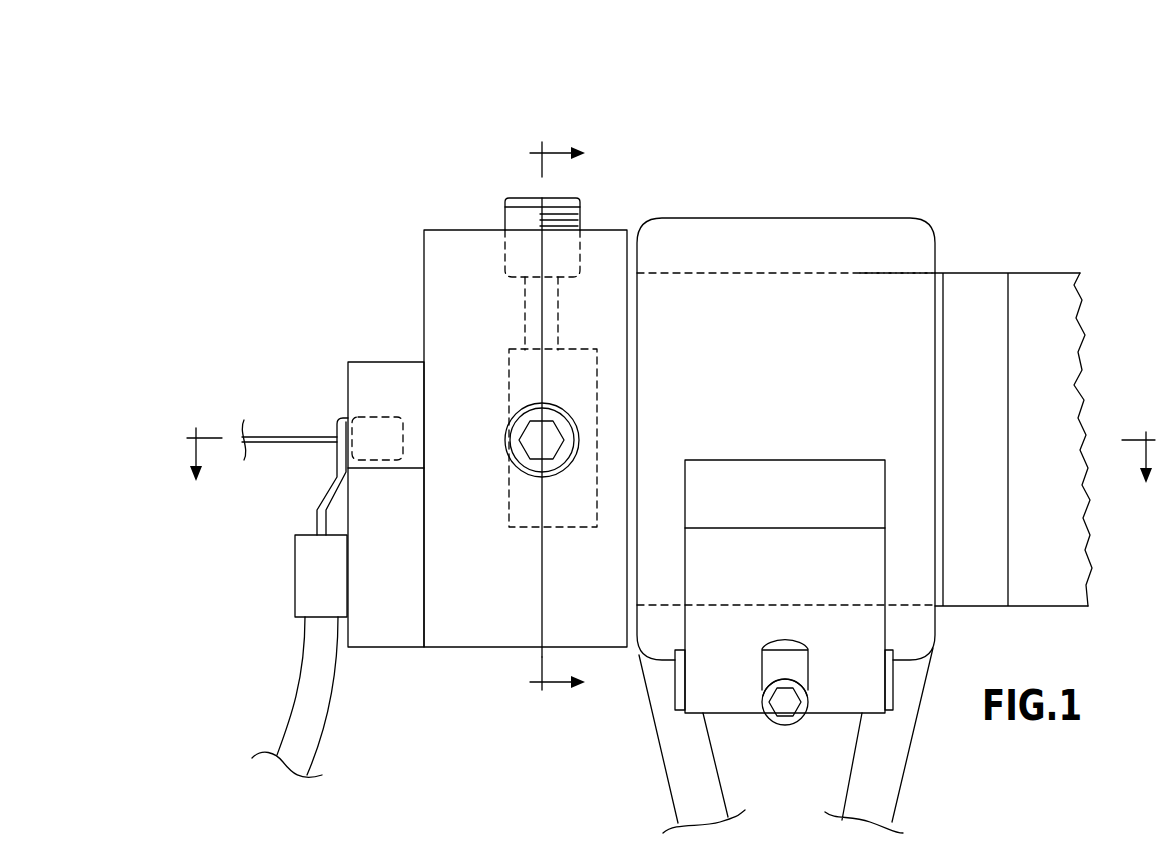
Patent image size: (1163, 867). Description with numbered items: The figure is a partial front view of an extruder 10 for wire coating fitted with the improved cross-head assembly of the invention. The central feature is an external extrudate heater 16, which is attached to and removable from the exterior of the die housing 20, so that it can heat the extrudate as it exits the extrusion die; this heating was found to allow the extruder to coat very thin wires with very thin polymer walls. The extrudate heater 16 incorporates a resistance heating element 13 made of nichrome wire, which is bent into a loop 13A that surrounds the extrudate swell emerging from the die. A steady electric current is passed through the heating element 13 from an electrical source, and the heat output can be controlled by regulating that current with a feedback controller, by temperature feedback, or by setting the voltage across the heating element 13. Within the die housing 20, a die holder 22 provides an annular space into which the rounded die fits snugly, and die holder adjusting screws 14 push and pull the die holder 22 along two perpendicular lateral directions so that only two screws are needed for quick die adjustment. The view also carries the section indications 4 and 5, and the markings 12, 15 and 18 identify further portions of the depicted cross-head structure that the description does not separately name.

The extruder 10 is at (1006, 140).
The clamp body 12 is at (735, 218).
The resistance heating element 13 is at (318, 483).
The loop 13A is at (381, 417).
The die holder adjusting screws 14 is at (505, 212).
The bore 15 is at (867, 270).
The external extrudate heater 16 is at (357, 362).
The plate 18 is at (283, 436).
The die housing 20 is at (402, 246).
The die holder 22 is at (508, 368).
The section line 4- 4 is at (671, 441).
The section line 5- 5 is at (557, 422).